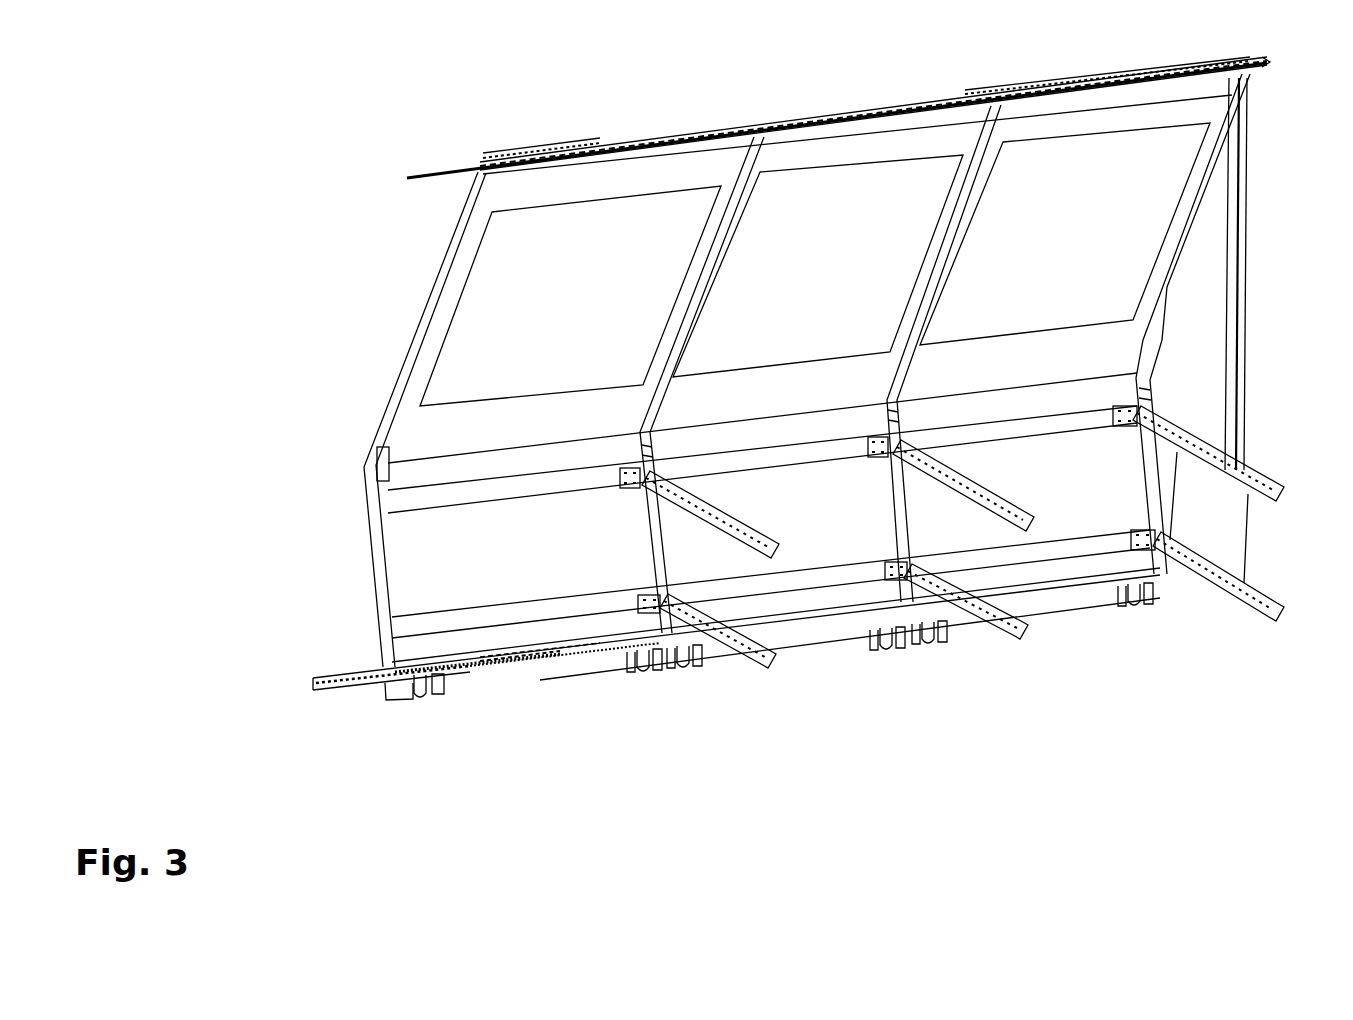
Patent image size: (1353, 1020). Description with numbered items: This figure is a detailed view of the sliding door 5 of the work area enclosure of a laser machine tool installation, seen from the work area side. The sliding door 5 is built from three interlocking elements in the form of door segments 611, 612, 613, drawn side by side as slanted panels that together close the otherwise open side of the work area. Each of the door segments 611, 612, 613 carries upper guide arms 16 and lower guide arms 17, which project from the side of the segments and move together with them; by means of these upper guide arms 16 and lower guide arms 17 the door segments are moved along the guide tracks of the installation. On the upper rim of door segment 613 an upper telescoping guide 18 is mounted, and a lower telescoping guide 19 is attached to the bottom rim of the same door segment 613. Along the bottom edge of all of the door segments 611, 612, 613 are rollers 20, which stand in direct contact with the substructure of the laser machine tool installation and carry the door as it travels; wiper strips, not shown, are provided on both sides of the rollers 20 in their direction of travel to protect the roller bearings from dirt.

The sliding door 5 is at (396, 349).
The upper telescoping guide 18 is at (468, 152).
The lower telescoping guide 19 is at (372, 660).
The rollers 20 is at (420, 698).
The upper guide arms 16 is at (745, 524).
The lower guide arms 17 is at (743, 660).
The door segment 613 is at (594, 299).
The door segment 612 is at (838, 278).
The door segment 611 is at (1090, 251).